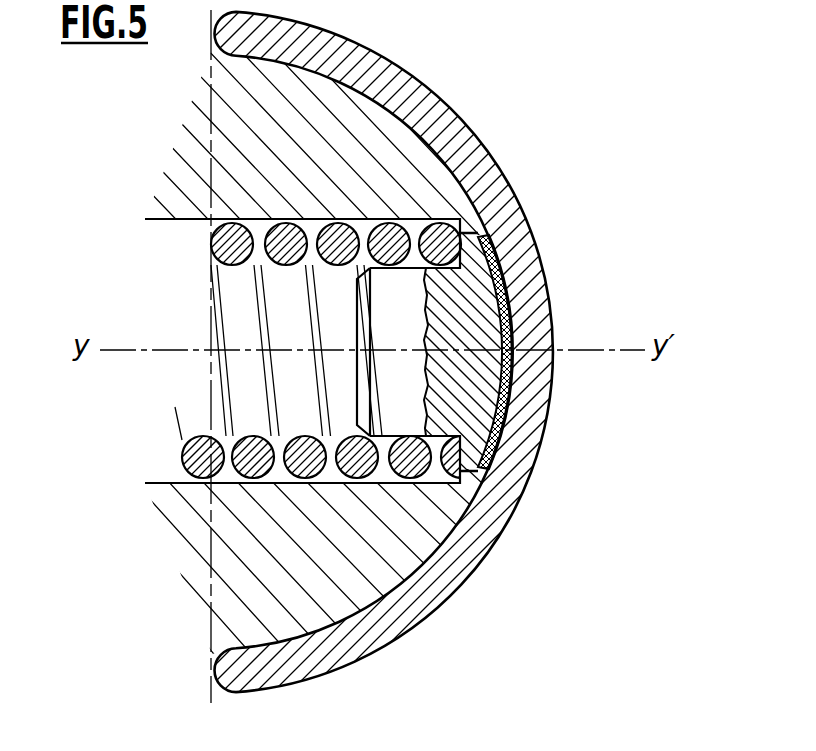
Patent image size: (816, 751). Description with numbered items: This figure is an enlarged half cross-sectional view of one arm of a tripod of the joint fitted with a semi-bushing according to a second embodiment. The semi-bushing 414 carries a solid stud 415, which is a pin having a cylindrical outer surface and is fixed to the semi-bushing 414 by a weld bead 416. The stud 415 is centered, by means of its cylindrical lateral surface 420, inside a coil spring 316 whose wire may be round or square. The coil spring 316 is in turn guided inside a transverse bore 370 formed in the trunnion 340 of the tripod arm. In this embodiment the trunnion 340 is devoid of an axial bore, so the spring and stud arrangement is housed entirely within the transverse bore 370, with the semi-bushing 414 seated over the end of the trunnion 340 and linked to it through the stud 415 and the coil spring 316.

The coil spring 316 is at (338, 236).
The trunnion 340 is at (345, 153).
The transverse bore 370 is at (178, 221).
The semi-bushing 414 is at (531, 212).
The stud 415 is at (453, 298).
The weld bead 416 is at (503, 318).
The cylindrical lateral surface 420 is at (414, 258).